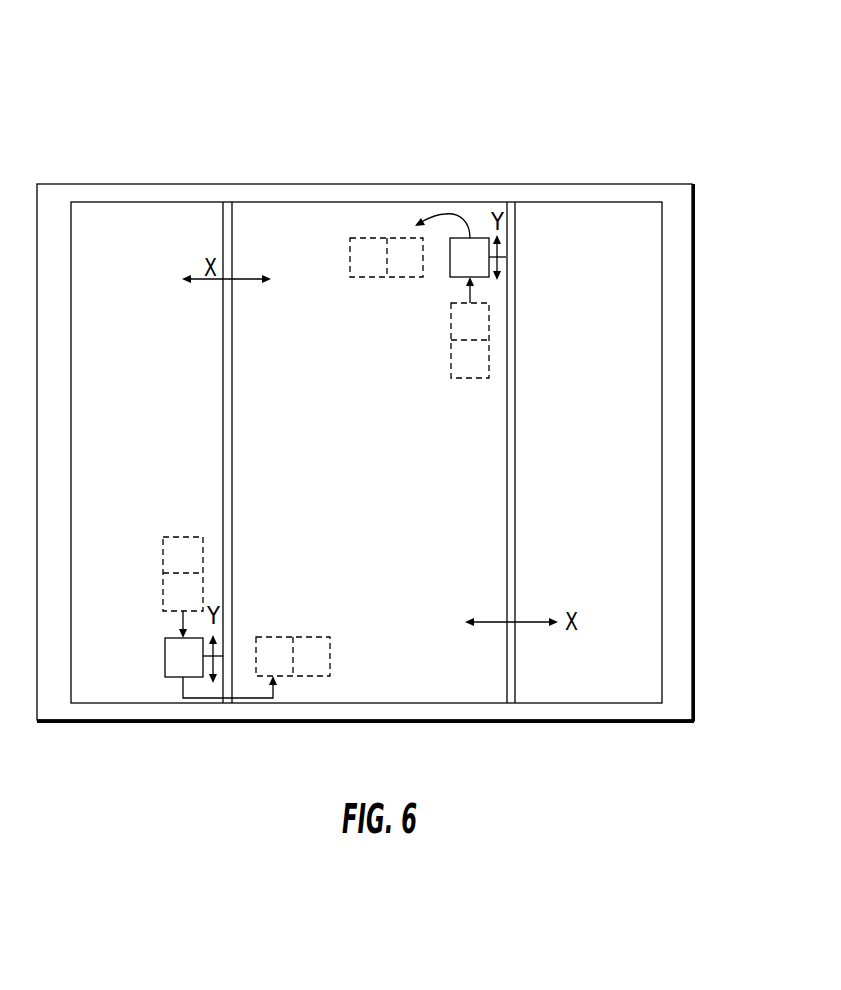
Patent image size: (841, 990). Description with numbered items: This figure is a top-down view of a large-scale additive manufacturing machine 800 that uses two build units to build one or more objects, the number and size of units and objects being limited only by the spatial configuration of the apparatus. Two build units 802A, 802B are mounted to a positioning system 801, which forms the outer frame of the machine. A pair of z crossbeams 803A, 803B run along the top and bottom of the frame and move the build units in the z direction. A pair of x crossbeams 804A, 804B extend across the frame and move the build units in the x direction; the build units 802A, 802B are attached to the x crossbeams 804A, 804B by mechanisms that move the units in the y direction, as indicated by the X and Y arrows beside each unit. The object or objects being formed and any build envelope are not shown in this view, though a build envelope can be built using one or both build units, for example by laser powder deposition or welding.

The large-scale additive manufacturing machine 800 is at (589, 127).
The positioning system 801 is at (675, 184).
The build unit 802A is at (475, 238).
The build unit 802B is at (165, 660).
The z crossbeam 803A is at (150, 184).
The z crossbeam 803B is at (112, 722).
The x crossbeam 804A is at (232, 400).
The x crossbeam 804B is at (516, 508).